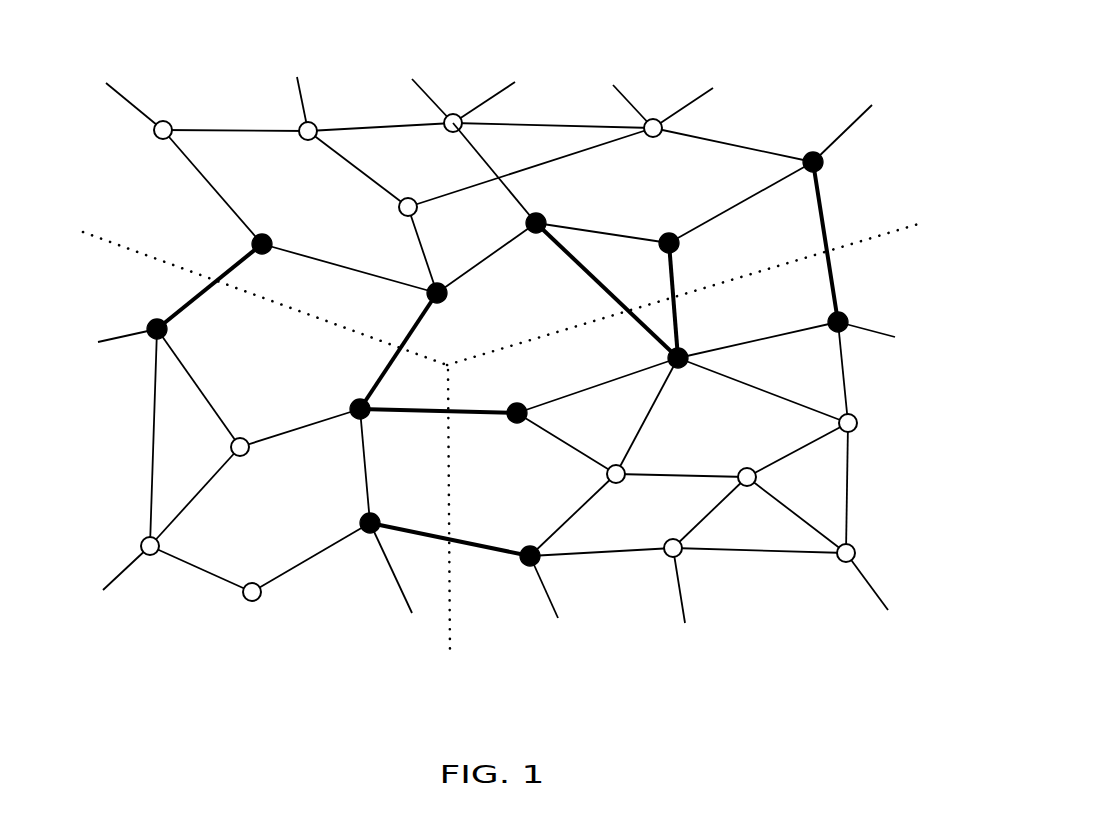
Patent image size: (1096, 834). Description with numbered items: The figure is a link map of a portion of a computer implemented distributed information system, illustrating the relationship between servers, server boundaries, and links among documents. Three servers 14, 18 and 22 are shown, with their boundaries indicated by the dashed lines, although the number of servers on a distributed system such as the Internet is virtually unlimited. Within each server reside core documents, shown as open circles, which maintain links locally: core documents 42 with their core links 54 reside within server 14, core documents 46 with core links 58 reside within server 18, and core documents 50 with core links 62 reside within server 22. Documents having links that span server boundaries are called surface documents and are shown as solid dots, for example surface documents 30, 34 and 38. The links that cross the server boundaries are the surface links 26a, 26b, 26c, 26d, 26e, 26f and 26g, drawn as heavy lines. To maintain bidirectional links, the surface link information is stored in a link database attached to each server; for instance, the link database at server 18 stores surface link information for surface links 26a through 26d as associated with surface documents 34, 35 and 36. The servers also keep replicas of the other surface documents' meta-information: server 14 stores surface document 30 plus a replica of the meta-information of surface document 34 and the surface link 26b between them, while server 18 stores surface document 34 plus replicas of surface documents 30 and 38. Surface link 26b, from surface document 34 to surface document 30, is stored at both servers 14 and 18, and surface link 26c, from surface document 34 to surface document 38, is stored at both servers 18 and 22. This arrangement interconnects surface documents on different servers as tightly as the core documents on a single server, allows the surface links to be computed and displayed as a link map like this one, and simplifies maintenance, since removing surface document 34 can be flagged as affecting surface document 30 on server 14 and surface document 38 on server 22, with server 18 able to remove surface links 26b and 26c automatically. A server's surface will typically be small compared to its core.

The server 14 is at (444, 34).
The server 18 is at (86, 488).
The server 22 is at (743, 696).
The surface link 26a is at (214, 281).
The surface link 26b is at (385, 351).
The surface link 26c is at (438, 397).
The surface link 26d is at (455, 540).
The surface link 26e is at (607, 290).
The surface link 26f is at (690, 295).
The surface link 26g is at (846, 242).
The surface document 30 is at (446, 273).
The surface document 34 is at (376, 423).
The surface document 35 is at (175, 333).
The surface document 36 is at (384, 512).
The surface document 38 is at (515, 399).
The core document 42 is at (411, 152).
The core document 46 is at (186, 535).
The core document 50 is at (683, 498).
The core link 54 is at (357, 208).
The core link 58 is at (238, 437).
The core link 62 is at (604, 416).